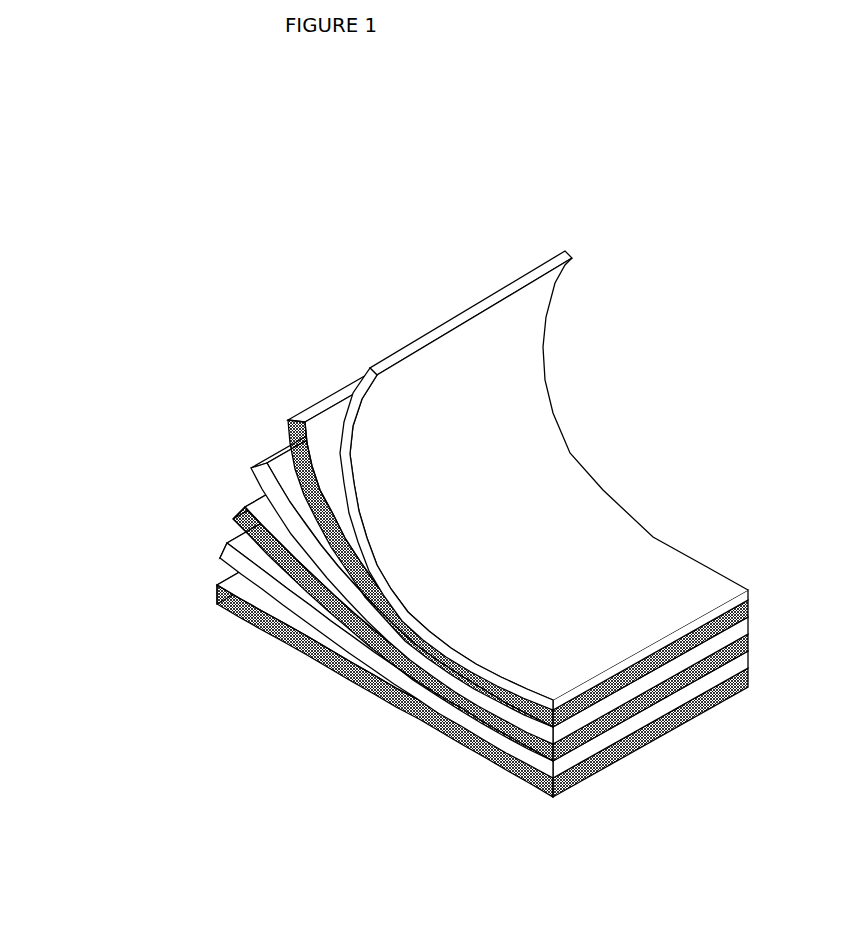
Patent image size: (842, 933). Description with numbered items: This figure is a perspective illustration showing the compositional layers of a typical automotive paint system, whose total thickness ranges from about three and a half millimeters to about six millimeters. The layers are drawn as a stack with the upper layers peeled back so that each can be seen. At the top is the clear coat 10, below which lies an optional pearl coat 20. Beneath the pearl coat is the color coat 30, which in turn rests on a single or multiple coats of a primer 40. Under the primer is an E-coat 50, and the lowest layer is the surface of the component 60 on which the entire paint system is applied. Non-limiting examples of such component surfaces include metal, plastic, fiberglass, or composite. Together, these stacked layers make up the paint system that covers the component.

The clear coat 10 is at (443, 299).
The optional pearl coat 20 is at (300, 405).
The color coat 30 is at (250, 462).
The primer 40 is at (228, 507).
The E-coat 50 is at (212, 541).
The surface of the component 60 is at (200, 586).